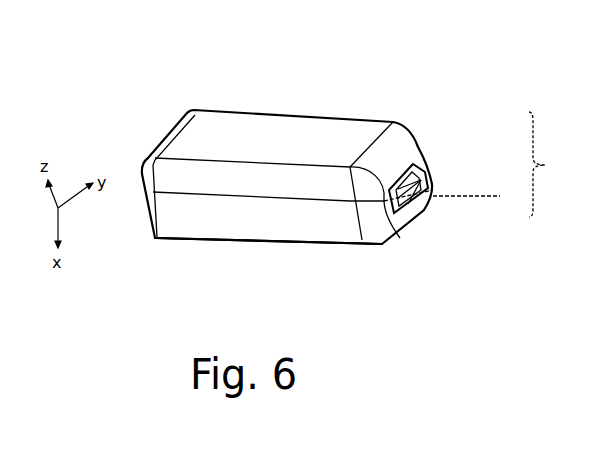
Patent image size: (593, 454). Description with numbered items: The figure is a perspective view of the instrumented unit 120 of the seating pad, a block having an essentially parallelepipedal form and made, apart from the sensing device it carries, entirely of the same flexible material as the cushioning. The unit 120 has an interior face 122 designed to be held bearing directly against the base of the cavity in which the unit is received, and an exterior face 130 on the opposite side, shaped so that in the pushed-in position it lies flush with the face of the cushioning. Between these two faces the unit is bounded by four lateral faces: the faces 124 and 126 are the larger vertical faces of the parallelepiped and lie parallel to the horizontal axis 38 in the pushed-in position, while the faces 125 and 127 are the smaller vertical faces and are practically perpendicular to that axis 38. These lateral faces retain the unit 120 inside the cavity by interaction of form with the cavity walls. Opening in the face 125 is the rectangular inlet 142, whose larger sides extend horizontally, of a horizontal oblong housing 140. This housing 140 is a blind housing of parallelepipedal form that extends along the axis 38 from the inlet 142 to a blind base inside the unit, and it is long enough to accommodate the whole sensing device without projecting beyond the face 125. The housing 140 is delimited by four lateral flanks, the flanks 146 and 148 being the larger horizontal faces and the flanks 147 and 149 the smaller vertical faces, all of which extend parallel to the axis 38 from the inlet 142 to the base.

The instrumented unit 120 is at (328, 174).
The interior face 122 is at (240, 143).
The lateral face 124 is at (213, 215).
The lateral face 125 is at (406, 219).
The lateral face 126 is at (398, 167).
The lateral face 127 is at (145, 190).
The exterior face 130 is at (278, 247).
The horizontal oblong housing 140 is at (556, 164).
The inlet 142 is at (432, 181).
The lateral flank 146 is at (417, 197).
The lateral flank 147 is at (431, 178).
The lateral flank 148 is at (426, 172).
The lateral flank 149 is at (433, 190).
The horizontal axis 38 is at (490, 196).